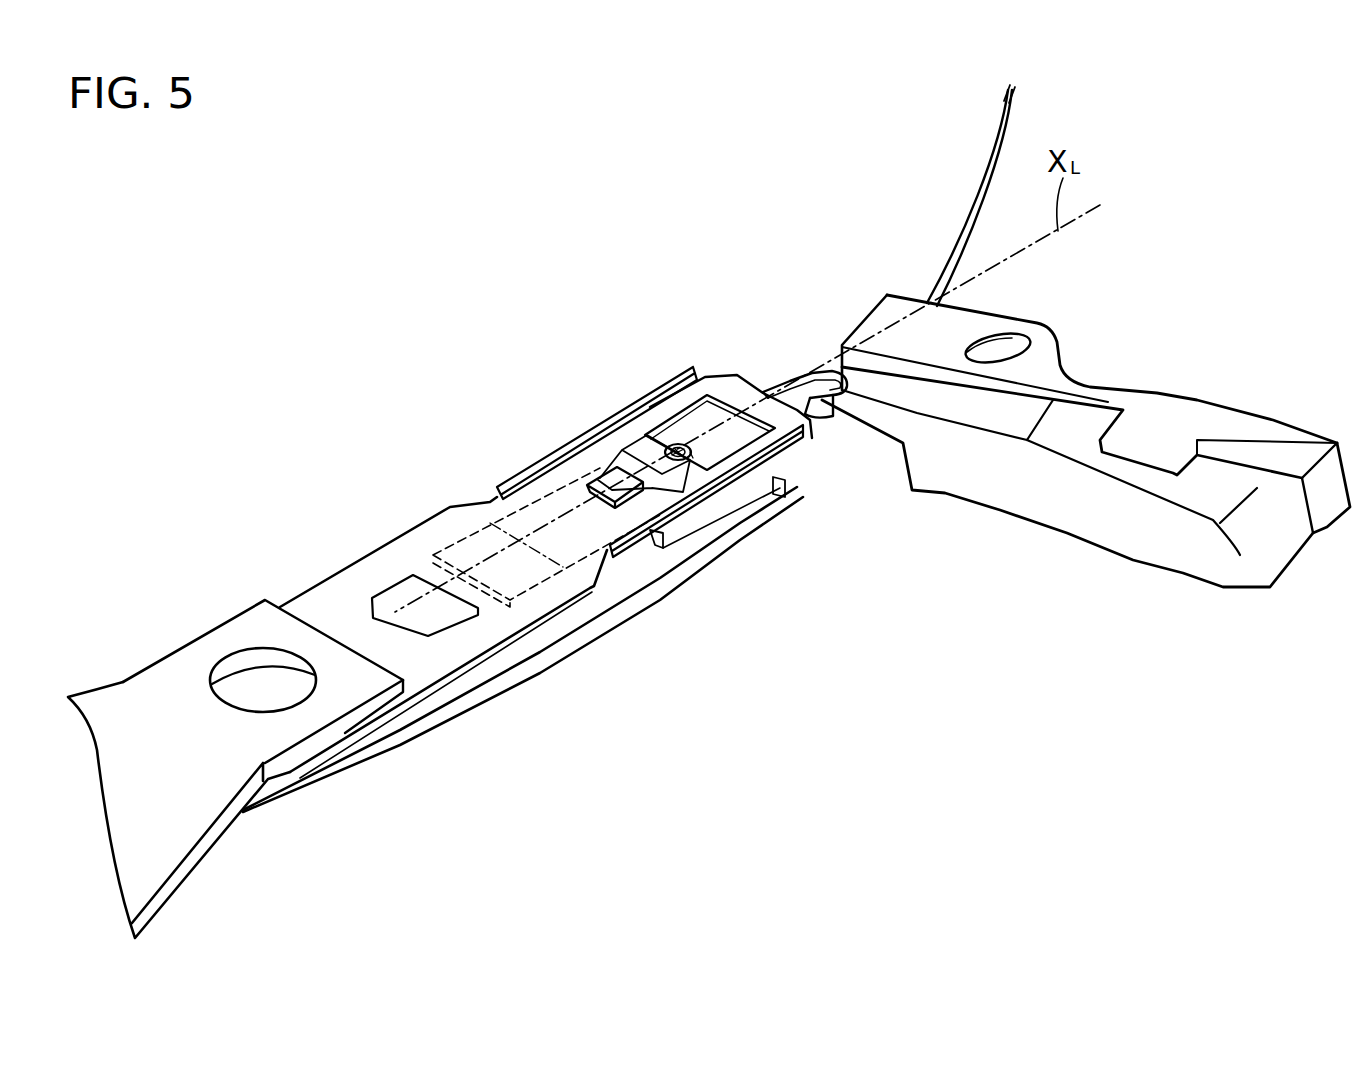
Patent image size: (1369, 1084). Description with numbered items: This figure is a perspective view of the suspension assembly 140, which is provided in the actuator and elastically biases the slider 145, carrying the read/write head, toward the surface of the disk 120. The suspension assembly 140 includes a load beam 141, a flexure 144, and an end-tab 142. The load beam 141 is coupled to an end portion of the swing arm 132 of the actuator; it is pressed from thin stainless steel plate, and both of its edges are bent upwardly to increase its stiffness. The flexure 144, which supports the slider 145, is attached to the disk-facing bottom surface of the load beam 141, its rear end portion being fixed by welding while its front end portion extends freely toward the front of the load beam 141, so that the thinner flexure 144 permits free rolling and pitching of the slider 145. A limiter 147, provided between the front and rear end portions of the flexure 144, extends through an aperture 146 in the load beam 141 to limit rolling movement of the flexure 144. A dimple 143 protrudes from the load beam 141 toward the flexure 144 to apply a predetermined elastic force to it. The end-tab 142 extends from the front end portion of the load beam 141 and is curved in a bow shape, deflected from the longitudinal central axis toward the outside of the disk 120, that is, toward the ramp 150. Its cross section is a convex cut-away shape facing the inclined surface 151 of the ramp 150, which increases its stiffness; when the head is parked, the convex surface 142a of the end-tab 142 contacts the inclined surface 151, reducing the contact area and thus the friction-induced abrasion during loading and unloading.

The disk 120 is at (537, 673).
The swing arm 132 is at (203, 790).
The suspension assembly 140 is at (649, 460).
The load beam 141 is at (602, 448).
The end-tab 142 is at (792, 376).
The convex surface 142a is at (836, 412).
The dimple 143 is at (677, 445).
The flexure 144 is at (793, 483).
The slider 145 is at (710, 522).
The aperture 146 is at (632, 467).
The limiter 147 is at (603, 480).
The ramp 150 is at (1086, 417).
The inclined surface 151 is at (860, 396).